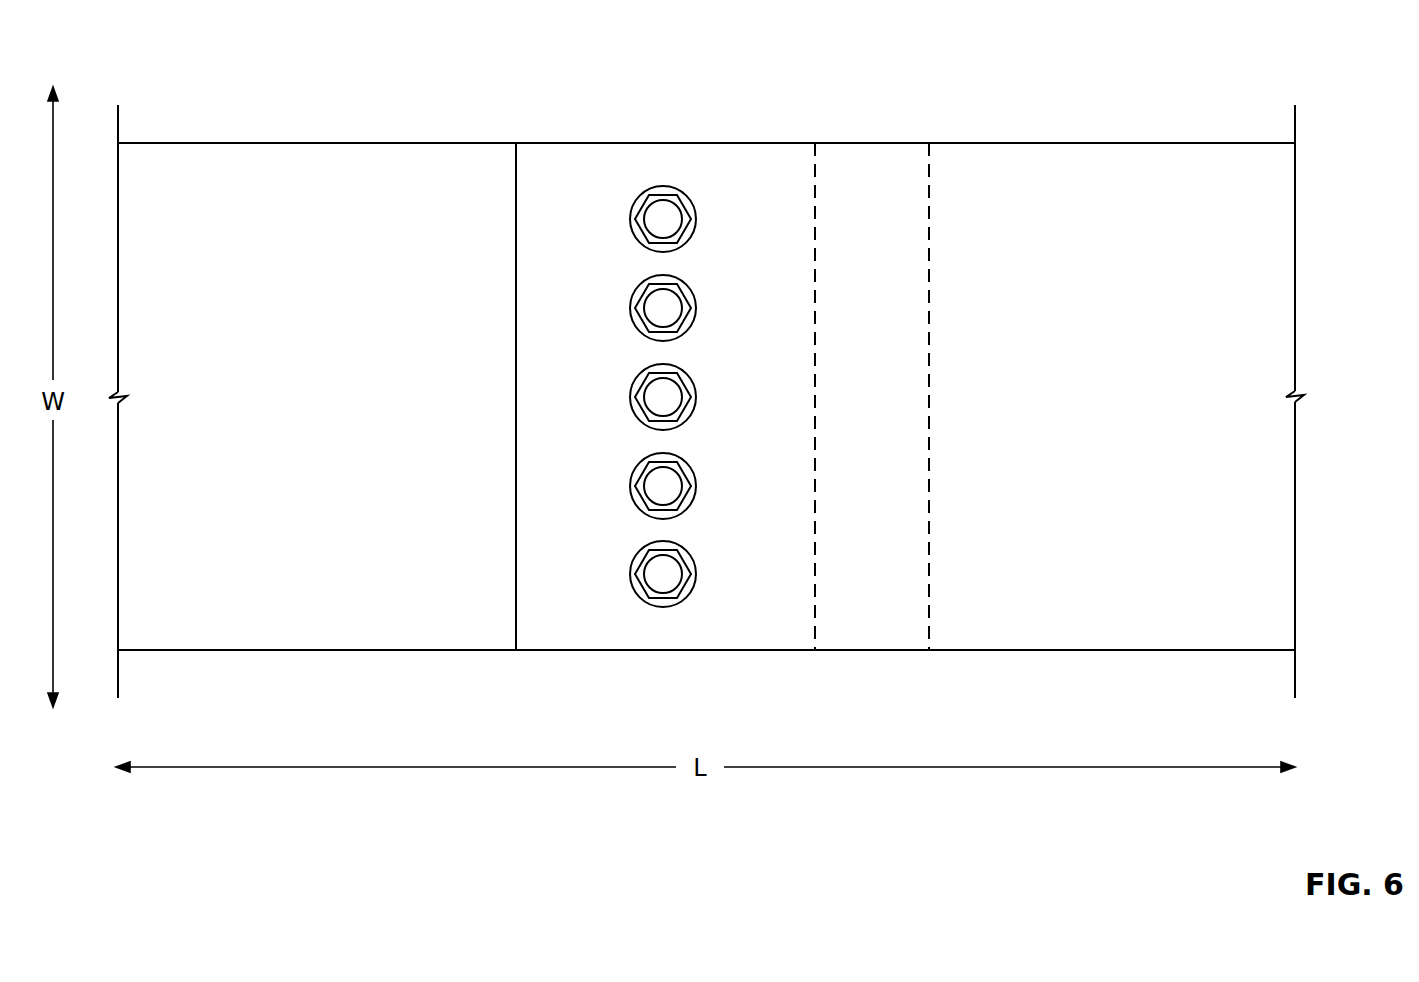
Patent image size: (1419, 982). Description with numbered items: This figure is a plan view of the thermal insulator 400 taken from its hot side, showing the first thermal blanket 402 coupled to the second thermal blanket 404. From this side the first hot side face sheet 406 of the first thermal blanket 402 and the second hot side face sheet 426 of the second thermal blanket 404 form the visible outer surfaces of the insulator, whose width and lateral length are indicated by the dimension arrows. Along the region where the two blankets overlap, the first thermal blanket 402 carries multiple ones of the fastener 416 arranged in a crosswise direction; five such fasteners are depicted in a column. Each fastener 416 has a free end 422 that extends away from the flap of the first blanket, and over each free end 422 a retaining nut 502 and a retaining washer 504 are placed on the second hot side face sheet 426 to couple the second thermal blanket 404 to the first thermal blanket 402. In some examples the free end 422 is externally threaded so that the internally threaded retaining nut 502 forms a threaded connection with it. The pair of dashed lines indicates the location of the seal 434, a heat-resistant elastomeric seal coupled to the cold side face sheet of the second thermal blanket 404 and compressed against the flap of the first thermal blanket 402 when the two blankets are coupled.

The thermal insulator 400 is at (1225, 143).
The first thermal blanket 402 is at (217, 143).
The second thermal blanket 404 is at (1152, 143).
The first hot side face sheet 406 is at (333, 163).
The fastener 416 is at (637, 220).
The free end 422 is at (663, 219).
The second hot side face sheet 426 is at (1065, 167).
The seal 434 is at (930, 157).
The retaining nut 502 is at (644, 202).
The retaining washer 504 is at (686, 195).